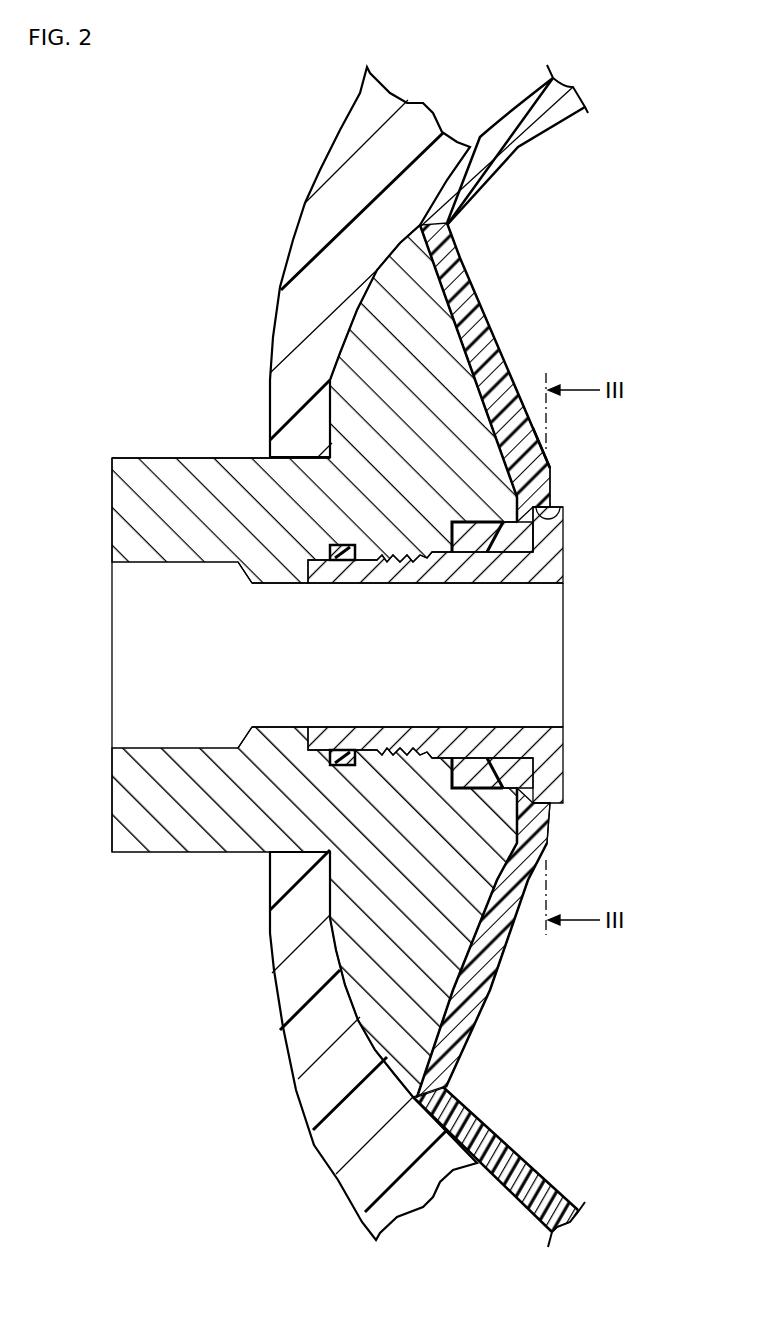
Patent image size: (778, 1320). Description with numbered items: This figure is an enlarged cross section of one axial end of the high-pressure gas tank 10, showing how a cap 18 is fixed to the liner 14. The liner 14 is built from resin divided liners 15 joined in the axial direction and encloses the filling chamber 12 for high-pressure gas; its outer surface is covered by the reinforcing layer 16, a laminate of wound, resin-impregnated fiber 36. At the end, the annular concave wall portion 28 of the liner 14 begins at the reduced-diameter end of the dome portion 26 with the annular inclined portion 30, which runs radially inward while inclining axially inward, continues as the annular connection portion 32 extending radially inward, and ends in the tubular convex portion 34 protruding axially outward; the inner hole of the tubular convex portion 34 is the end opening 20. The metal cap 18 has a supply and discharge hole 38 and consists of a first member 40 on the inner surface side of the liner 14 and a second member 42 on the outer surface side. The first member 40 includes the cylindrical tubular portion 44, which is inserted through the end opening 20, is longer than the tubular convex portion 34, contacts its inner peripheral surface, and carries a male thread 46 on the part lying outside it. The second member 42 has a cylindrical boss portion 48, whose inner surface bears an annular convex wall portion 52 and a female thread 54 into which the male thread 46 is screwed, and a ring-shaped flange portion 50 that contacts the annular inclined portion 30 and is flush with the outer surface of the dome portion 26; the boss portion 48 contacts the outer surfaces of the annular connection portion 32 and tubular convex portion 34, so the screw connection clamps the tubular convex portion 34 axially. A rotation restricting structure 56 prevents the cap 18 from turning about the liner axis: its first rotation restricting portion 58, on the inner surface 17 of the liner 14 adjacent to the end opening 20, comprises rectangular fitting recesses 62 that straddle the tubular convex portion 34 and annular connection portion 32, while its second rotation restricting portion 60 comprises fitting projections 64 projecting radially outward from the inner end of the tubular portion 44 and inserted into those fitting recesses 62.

The high-pressure gas tank 10 is at (226, 99).
The filling chamber 12 is at (530, 1150).
The liner 14 is at (590, 127).
The divided liner 15 is at (571, 72).
The reinforcing layer 16 is at (322, 653).
The inner surface 17 is at (553, 470).
The cap 18 is at (546, 932).
The end opening 20 is at (515, 755).
The dome portion 26 is at (513, 120).
The annular concave wall portion 28 is at (481, 297).
The annular inclined portion 30 is at (500, 363).
The annular connection portion 32 is at (549, 496).
The tubular convex portion 34 is at (480, 547).
The fiber 36 is at (313, 240).
The supply and discharge hole 38 is at (152, 655).
The first member 40 is at (564, 773).
The second member 42 is at (519, 824).
The tubular portion 44 is at (445, 735).
The male thread 46 is at (400, 548).
The boss portion 48 is at (163, 470).
The flange portion 50 is at (357, 348).
The convex wall portion 52 is at (272, 574).
The female thread 54 is at (407, 748).
The rotation restricting structure 56 is at (639, 530).
The first rotation restricting portion 58 is at (556, 522).
The second rotation restricting portion 60 is at (548, 538).
The fitting recess 62 is at (618, 514).
The fitting projection 64 is at (617, 534).